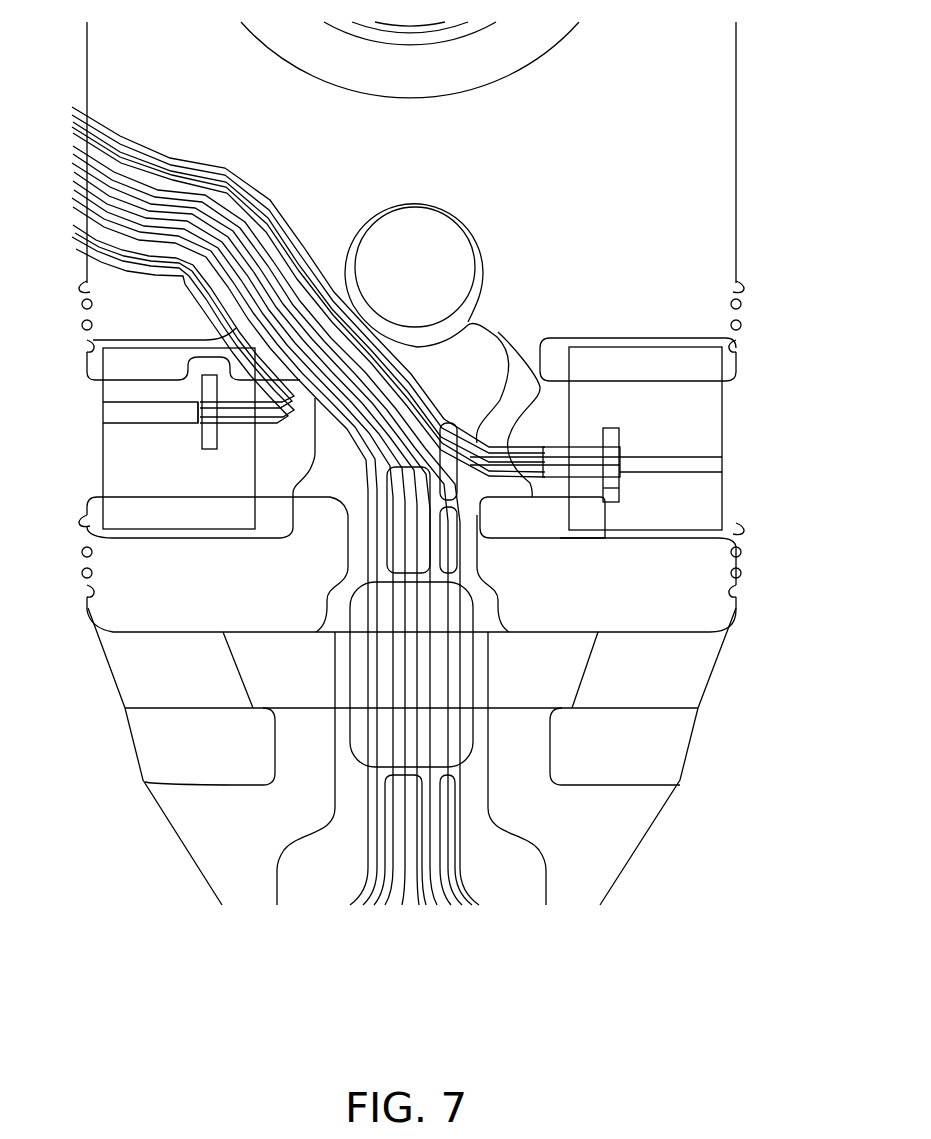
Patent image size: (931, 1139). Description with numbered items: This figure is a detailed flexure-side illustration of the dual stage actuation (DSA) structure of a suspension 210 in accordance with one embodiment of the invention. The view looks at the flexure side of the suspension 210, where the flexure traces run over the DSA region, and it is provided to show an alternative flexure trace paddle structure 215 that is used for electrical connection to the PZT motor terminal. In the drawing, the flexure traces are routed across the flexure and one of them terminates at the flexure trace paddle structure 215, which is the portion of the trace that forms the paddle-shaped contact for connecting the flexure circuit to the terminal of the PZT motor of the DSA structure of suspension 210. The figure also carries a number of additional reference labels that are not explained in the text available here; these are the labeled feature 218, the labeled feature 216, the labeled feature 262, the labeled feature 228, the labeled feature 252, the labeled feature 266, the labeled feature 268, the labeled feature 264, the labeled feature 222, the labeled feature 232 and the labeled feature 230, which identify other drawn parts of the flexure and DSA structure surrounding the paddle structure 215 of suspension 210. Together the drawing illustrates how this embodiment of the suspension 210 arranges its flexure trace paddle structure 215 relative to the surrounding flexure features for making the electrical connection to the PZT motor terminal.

The suspension 210 is at (600, 140).
The frame edge 218 is at (688, 303).
The conductive traces 216 is at (447, 389).
The signal trace 262 is at (531, 457).
The flexure trace paddle structure 215 is at (582, 418).
The component mounting area 228 is at (678, 405).
The contact pad 252 is at (680, 428).
The conductive lead 266 is at (613, 437).
The lower contact pad 268 is at (613, 488).
The connector trace 264 is at (553, 470).
The body portion 222 is at (680, 620).
The stiffener region 232 is at (672, 683).
The tail portion 230 is at (135, 670).